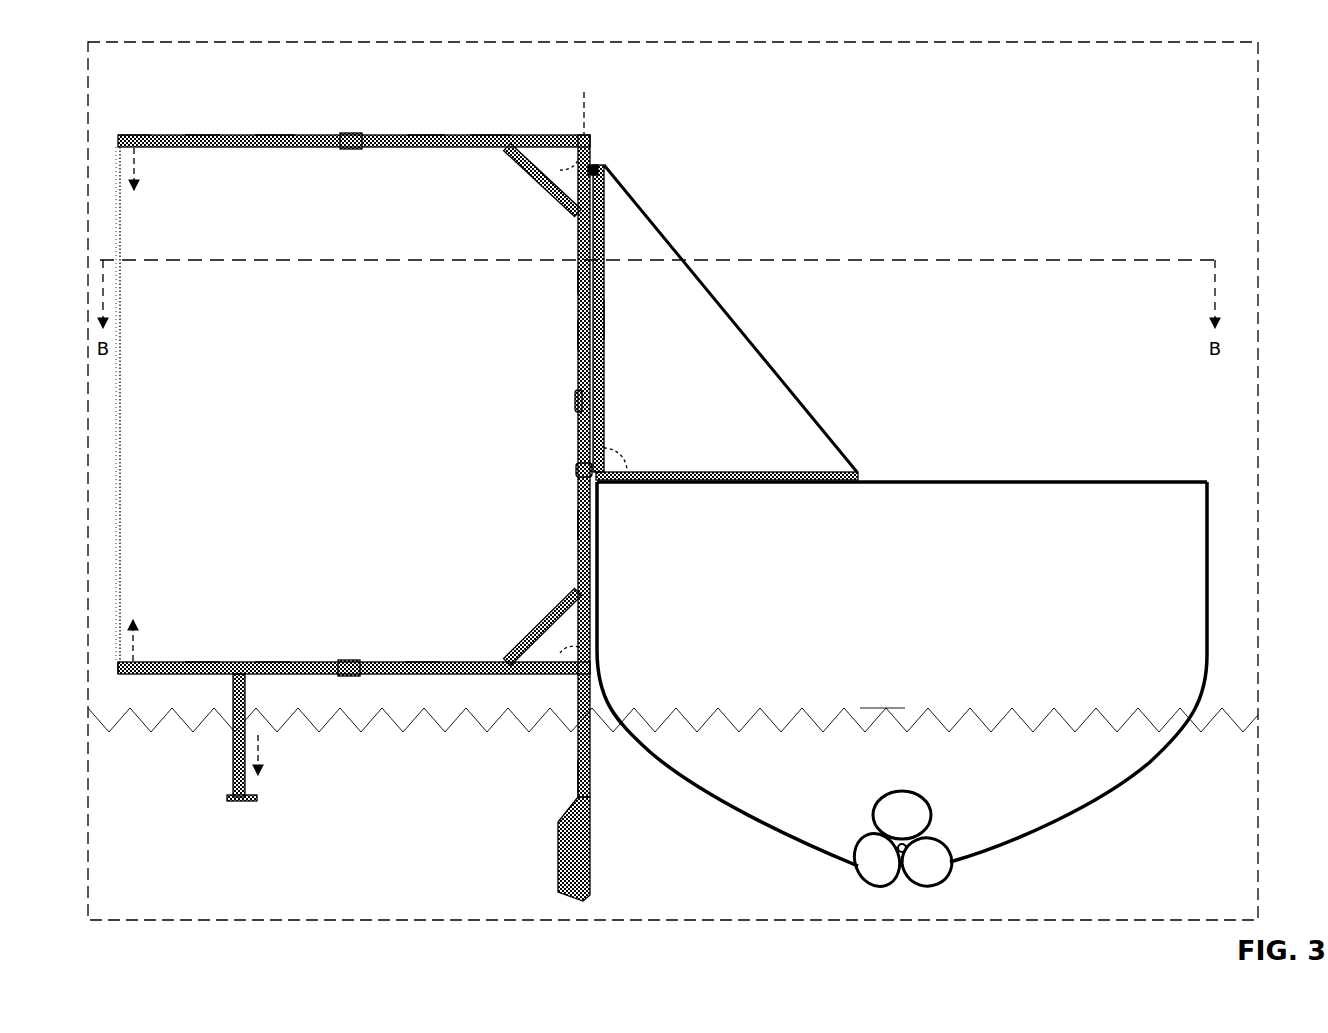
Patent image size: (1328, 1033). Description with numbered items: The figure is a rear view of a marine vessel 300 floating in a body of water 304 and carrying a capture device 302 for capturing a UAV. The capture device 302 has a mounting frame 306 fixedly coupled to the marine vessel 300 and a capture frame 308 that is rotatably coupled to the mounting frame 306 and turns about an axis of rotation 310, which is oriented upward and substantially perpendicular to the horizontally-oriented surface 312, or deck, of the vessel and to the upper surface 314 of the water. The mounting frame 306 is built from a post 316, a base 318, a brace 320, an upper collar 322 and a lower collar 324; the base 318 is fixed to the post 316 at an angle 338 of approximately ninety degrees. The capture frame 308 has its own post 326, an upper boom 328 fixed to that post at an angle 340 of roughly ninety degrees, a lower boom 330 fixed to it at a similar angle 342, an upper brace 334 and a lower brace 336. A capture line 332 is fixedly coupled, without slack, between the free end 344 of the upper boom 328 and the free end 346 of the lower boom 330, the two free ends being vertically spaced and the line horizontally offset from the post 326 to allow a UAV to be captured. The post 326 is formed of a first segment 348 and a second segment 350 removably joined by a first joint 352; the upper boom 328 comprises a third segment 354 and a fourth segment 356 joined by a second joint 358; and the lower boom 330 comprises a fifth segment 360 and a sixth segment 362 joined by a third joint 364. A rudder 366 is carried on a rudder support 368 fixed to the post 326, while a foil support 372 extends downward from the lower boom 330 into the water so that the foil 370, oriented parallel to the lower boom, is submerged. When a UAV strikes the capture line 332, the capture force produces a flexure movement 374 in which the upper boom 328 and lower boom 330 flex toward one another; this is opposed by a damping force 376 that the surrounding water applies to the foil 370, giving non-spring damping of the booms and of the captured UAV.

The marine vessel 300 is at (960, 481).
The capture device 302 is at (612, 110).
The body of water 304 is at (673, 748).
The mounting frame 306 is at (605, 357).
The capture frame 308 is at (489, 135).
The axis of rotation 310 is at (581, 120).
The horizontally-oriented surface 312 is at (1047, 481).
The upper surface 314 is at (883, 710).
The post 316 is at (605, 320).
The base 318 is at (738, 472).
The brace 320 is at (740, 320).
The upper collar 322 is at (597, 167).
The lower collar 324 is at (577, 469).
The post 326 is at (578, 335).
The upper boom 328 is at (272, 135).
The lower boom 330 is at (270, 662).
The capture line 332 is at (122, 401).
The upper brace 334 is at (565, 208).
The lower brace 336 is at (557, 612).
The angle 338 is at (625, 447).
The angle 340 is at (556, 170).
The angle 342 is at (531, 640).
The free end 344 is at (125, 135).
The free end 346 is at (121, 674).
The first segment 348 is at (578, 282).
The second segment 350 is at (578, 525).
The first joint 352 is at (577, 402).
The third segment 354 is at (201, 135).
The fourth segment 356 is at (427, 135).
The second joint 358 is at (352, 134).
The fifth segment 360 is at (200, 662).
The sixth segment 362 is at (425, 662).
The third joint 364 is at (350, 661).
The rudder 366 is at (559, 860).
The rudder support 368 is at (577, 777).
The foil 370 is at (227, 798).
The foil support 372 is at (232, 752).
The flexure movement 374 is at (138, 167).
The damping force 376 is at (262, 757).